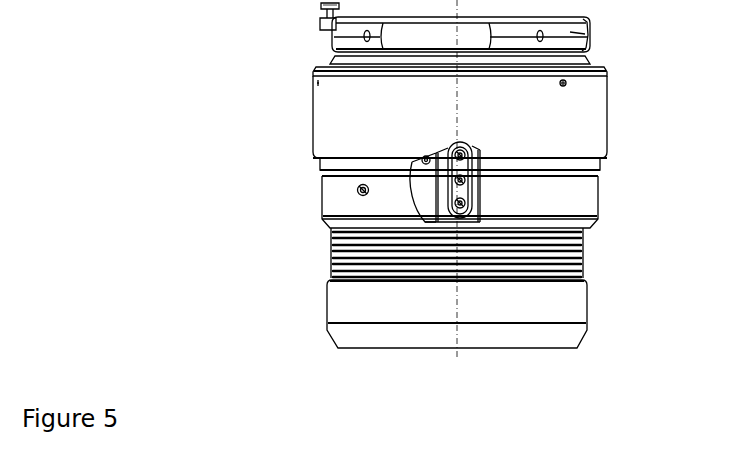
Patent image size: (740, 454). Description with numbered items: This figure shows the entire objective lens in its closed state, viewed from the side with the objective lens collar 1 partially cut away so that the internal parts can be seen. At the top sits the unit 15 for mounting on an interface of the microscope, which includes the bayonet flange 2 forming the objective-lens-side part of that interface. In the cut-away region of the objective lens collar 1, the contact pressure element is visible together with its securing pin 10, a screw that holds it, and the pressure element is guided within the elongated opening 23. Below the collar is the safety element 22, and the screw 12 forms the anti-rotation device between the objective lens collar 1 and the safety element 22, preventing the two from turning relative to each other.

The objective lens collar 1 is at (336, 121).
The bayonet flange 2 is at (590, 37).
The securing pin 10 is at (468, 195).
The screw 12 is at (360, 187).
The unit for mounting on an interface of the microscope 15 is at (306, 4).
The safety element 22 is at (563, 312).
The elongated opening 23 is at (455, 153).